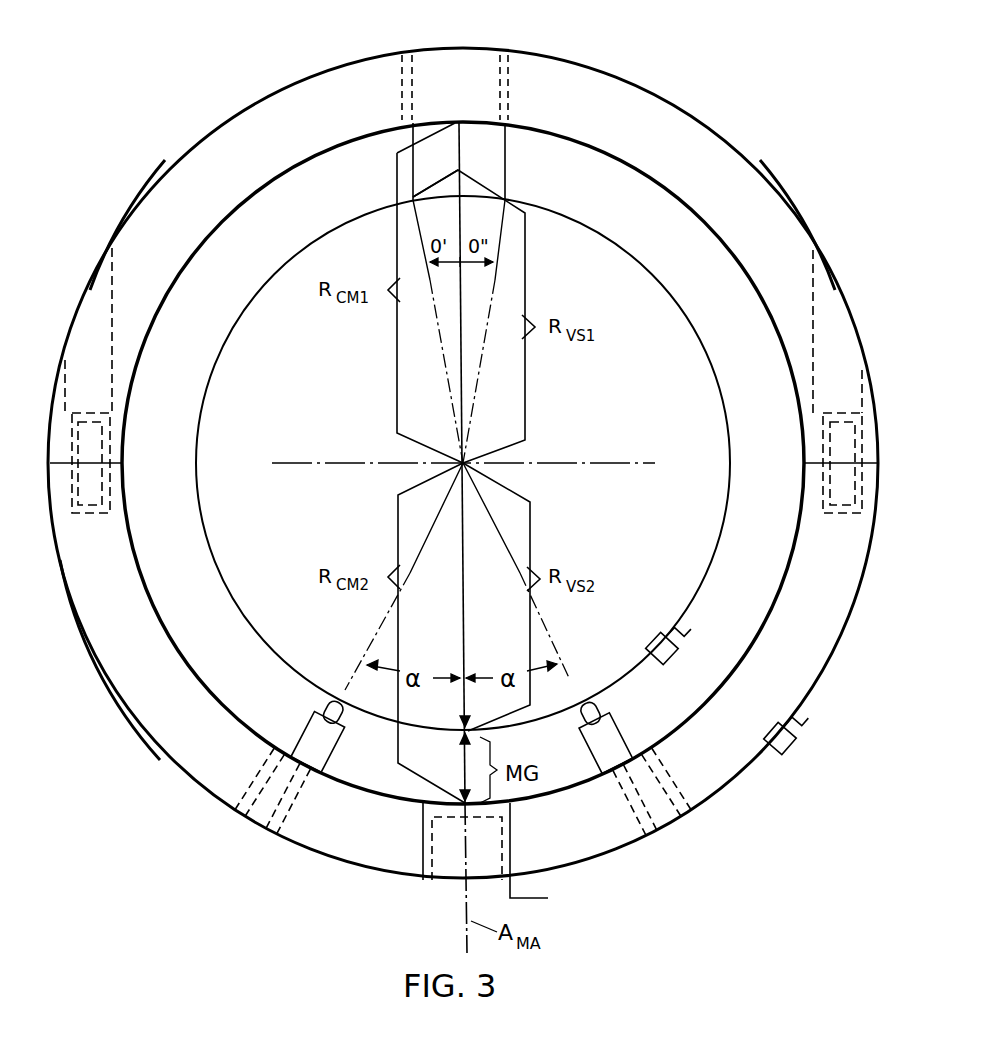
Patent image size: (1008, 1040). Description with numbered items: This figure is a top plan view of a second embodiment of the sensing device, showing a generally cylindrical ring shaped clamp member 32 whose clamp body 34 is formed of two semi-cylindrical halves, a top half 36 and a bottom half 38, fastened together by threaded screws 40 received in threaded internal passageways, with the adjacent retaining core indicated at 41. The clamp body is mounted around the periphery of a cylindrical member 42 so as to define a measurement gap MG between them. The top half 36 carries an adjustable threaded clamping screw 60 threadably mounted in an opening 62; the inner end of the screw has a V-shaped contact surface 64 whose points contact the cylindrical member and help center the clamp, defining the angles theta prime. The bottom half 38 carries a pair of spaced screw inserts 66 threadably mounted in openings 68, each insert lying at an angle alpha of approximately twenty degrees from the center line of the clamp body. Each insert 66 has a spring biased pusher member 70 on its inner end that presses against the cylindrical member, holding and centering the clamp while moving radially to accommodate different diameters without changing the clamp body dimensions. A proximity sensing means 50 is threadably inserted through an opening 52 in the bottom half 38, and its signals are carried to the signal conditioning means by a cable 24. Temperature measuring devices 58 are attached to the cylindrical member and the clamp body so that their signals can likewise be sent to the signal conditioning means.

The cable 24 is at (536, 894).
The clamp member 32 is at (722, 122).
The clamp body 34 is at (766, 192).
The top half 36 is at (152, 196).
The bottom half 38 is at (112, 683).
The threaded screws 40 is at (840, 403).
The bolt core 41 is at (858, 505).
The cylindrical member 42 is at (722, 547).
The proximity sensing means 50 is at (500, 843).
The opening 52 is at (423, 840).
The temperature measuring devices 58 is at (770, 746).
The clamping screw 60 is at (463, 53).
The opening 62 is at (511, 100).
The V-shaped contact surface 64 is at (426, 190).
The screw inserts 66 is at (655, 790).
The openings 68 is at (618, 818).
The spring biased pusher member 70 is at (585, 715).